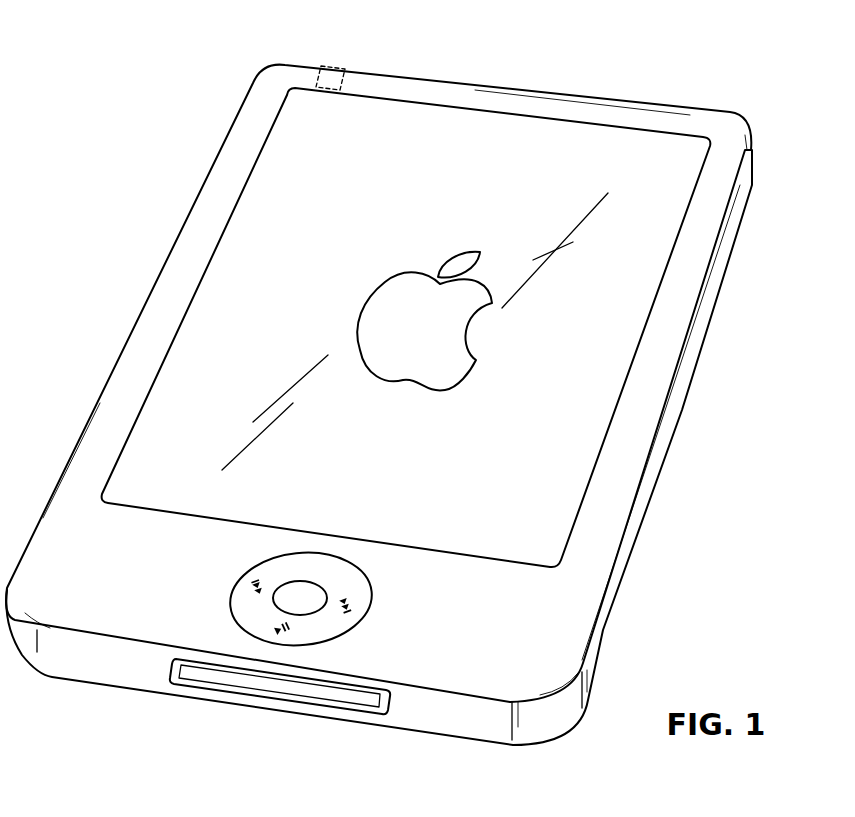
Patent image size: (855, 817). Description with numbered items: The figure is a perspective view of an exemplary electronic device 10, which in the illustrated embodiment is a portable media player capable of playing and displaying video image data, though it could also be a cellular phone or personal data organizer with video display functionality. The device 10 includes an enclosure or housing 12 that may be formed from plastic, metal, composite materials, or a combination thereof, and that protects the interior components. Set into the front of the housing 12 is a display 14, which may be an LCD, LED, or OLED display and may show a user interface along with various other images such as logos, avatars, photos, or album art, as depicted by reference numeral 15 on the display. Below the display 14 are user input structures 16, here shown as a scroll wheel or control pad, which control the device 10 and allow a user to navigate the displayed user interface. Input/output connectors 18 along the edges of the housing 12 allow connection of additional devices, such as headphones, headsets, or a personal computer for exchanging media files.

The electronic device 10 is at (150, 90).
The enclosure or housing 12 is at (753, 175).
The display 14 is at (598, 133).
The images such as logos 15 is at (365, 292).
The user input structures 16 is at (230, 600).
The input/output connectors 18 is at (322, 67).